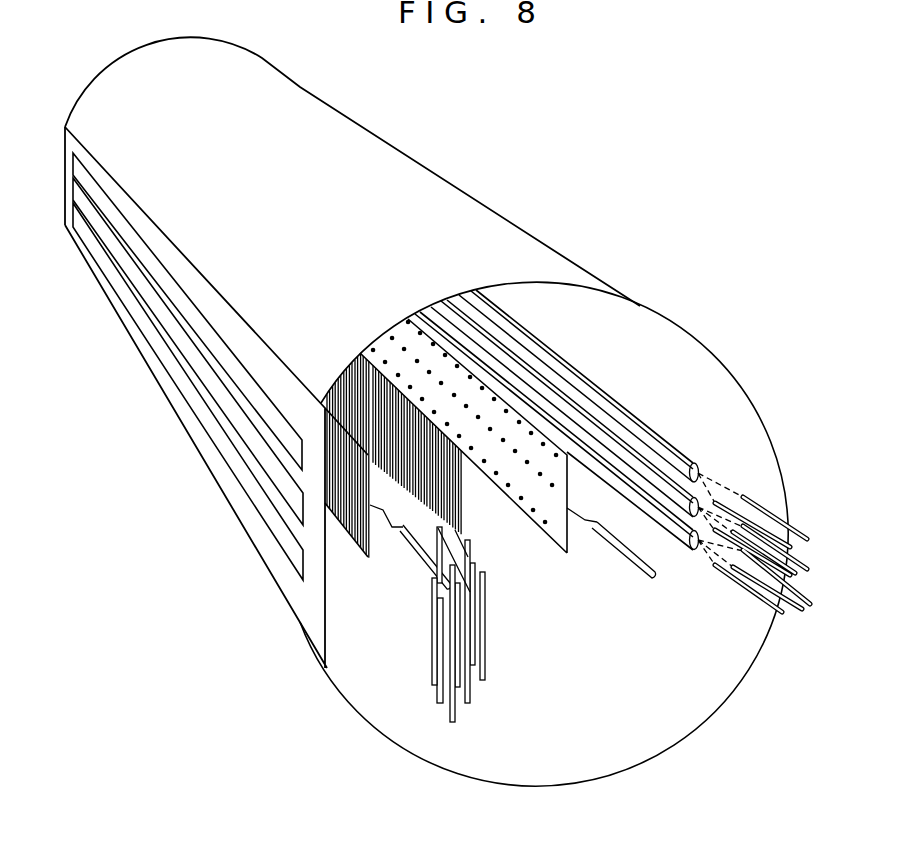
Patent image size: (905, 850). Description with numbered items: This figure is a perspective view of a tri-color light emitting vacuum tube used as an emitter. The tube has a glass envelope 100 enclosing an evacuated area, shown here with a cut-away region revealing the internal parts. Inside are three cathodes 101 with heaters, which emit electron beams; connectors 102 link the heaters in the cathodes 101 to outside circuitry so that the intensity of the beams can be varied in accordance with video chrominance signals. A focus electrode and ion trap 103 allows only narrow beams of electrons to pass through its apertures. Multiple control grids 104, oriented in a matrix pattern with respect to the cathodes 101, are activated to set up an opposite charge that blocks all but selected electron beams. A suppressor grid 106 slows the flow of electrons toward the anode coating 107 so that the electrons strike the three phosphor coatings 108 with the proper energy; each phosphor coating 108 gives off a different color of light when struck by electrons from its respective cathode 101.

The glass envelope 100 is at (532, 243).
The cathodes 101 is at (642, 462).
The connectors 102 is at (750, 593).
The focus electrode and ion trap 103 is at (558, 550).
The control grids 104 is at (463, 502).
The suppressor grid 106 is at (355, 550).
The anode coating 107 is at (240, 500).
The phosphor coatings 108 is at (282, 428).